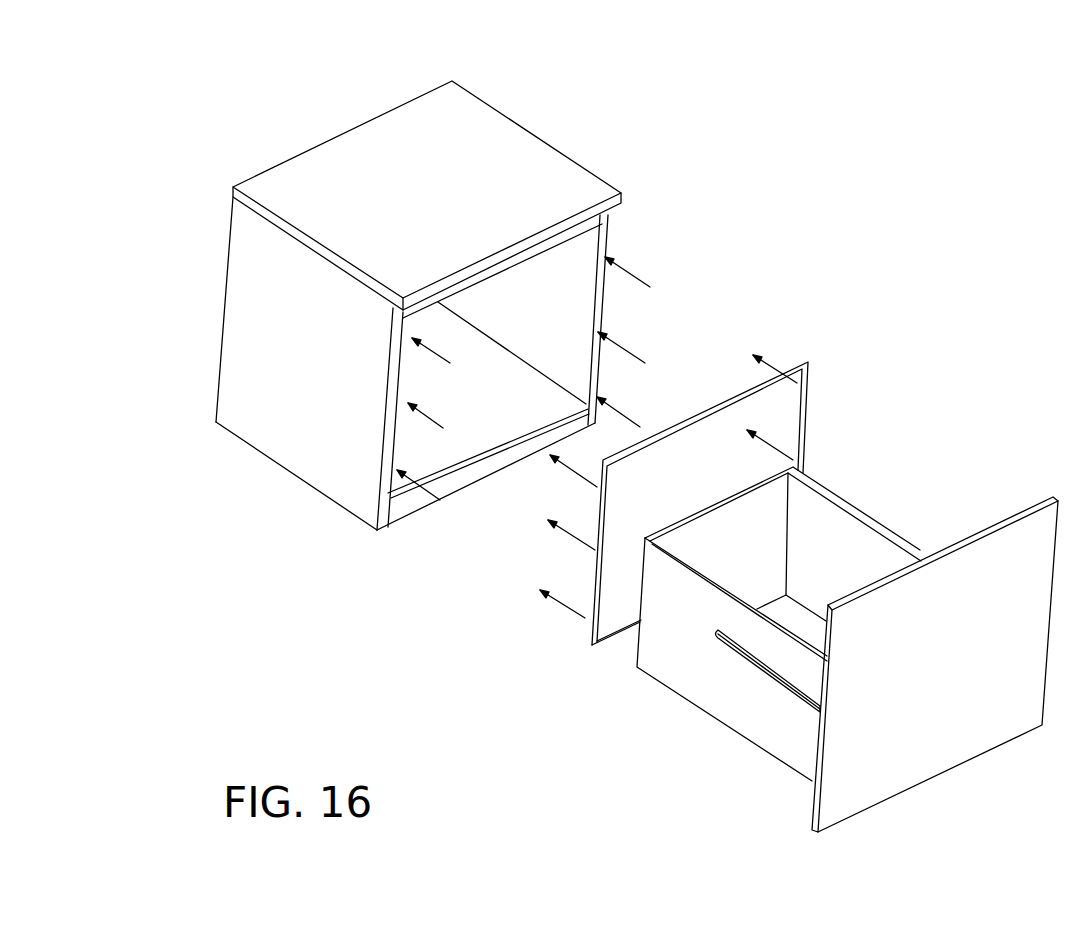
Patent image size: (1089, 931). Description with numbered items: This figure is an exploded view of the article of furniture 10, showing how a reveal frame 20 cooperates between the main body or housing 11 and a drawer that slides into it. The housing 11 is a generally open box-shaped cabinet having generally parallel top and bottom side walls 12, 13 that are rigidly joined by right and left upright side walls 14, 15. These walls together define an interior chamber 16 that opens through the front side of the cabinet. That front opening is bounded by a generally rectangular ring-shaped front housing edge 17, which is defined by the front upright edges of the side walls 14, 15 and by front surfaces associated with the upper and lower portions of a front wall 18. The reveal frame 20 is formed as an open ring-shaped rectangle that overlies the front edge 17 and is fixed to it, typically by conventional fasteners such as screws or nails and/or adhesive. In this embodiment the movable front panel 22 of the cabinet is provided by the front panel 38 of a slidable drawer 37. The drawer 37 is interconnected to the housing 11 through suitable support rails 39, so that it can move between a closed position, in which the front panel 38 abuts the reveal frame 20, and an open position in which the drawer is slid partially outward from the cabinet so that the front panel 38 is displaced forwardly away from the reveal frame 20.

The article of furniture 10 is at (733, 265).
The main body or housing 11 is at (290, 475).
The top side wall 12 is at (462, 132).
The bottom side wall 13 is at (540, 410).
The right upright side wall 14 is at (268, 300).
The left upright side wall 15 is at (583, 250).
The interior chamber 16 is at (488, 298).
The front housing edge 17 is at (385, 443).
The front wall 18 is at (453, 483).
The reveal frame 20 is at (584, 655).
The movable front panel 22 is at (800, 835).
The slidable drawer 37 is at (753, 722).
The front panel of drawer 38 is at (930, 752).
The support rails 39 is at (747, 660).